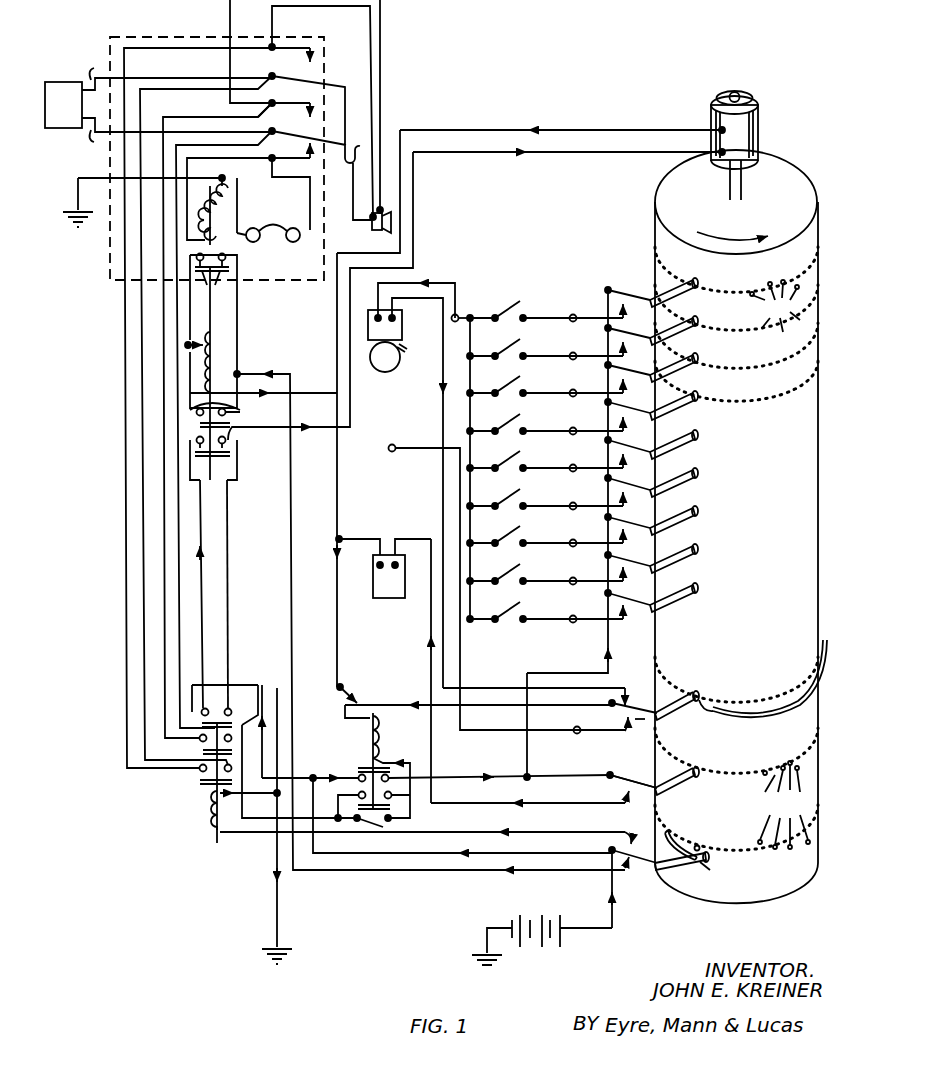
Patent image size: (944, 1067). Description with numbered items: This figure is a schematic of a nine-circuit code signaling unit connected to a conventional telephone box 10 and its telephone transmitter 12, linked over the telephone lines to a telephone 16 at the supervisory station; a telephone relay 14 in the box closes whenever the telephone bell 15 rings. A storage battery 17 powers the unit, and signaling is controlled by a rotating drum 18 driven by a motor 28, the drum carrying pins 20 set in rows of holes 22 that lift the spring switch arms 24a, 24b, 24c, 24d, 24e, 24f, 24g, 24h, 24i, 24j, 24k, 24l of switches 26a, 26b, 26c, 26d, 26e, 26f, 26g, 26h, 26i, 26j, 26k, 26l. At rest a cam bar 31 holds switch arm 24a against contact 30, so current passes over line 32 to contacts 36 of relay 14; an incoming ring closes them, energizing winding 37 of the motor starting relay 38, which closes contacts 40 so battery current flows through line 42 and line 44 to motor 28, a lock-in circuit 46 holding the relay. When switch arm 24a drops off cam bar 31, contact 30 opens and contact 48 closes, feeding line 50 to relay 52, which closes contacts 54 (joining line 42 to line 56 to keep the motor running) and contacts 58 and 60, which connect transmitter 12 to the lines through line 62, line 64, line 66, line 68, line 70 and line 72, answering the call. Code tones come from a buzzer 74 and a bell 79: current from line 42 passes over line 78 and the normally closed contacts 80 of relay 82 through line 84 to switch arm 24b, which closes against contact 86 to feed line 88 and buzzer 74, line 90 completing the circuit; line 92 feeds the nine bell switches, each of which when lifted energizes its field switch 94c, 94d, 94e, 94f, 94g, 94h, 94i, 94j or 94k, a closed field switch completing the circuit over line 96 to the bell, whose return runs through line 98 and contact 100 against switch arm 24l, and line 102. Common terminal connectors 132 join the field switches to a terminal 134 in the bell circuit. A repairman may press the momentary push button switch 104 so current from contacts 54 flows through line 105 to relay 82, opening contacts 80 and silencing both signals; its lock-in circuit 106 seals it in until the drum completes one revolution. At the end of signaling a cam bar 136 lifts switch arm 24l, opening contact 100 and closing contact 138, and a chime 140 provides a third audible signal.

The telephone box 10 is at (161, 37).
The telephone transmitter 12 is at (372, 228).
The telephone relay 14 is at (232, 240).
The telephone bell 15 is at (294, 244).
The telephone 16 is at (64, 82).
The storage battery 17 is at (544, 918).
The rotating drum 18 is at (736, 526).
The pins 20 is at (718, 777).
The holes 22 is at (780, 564).
The switch arm 24a is at (683, 870).
The switch arm 24b is at (690, 790).
The switch arm 24c is at (672, 598).
The switch arm 24d is at (675, 562).
The switch arm 24e is at (655, 535).
The switch arm 24f is at (650, 491).
The switch arm 24g is at (655, 458).
The switch arm 24h is at (651, 414).
The switch arm 24i is at (660, 380).
The switch arm 24j is at (650, 329).
The switch arm 24k is at (650, 295).
The switch arm 24l is at (688, 695).
The switch 26a is at (724, 868).
The switch 26b is at (712, 757).
The switch 26c is at (714, 577).
The switch 26d is at (716, 540).
The switch 26e is at (716, 501).
The switch 26f is at (713, 462).
The switch 26g is at (716, 424).
The switch 26h is at (712, 387).
The switch 26i is at (711, 349).
The switch 26j is at (712, 312).
The switch 26k is at (716, 273).
The switch 26l is at (720, 696).
The motor 28 is at (757, 125).
The contact 30 is at (630, 887).
The cam bar 31 is at (690, 845).
The line 32 is at (293, 557).
The contacts 36 is at (213, 331).
The winding 37 is at (222, 318).
The motor starting relay 38 is at (245, 447).
The contacts 40 is at (213, 453).
The line 42 is at (203, 636).
The line 44 is at (508, 160).
The lock in circuit 46 is at (229, 413).
The contact 48 is at (639, 824).
The line 50 is at (594, 828).
The relay 52 is at (196, 808).
The contacts 54 is at (208, 710).
The line 56 is at (228, 590).
The contacts 58 is at (210, 743).
The contacts 60 is at (205, 778).
The line 62 is at (145, 535).
The line 64 is at (127, 510).
The line 66 is at (369, 28).
The line 68 is at (383, 88).
The line 70 is at (200, 117).
The line 72 is at (180, 548).
The buzzer 74 is at (398, 593).
The line 78 is at (340, 802).
The bell 79 is at (400, 368).
The contacts 80 is at (370, 770).
The relay 82 is at (385, 762).
The line 84 is at (478, 776).
The contact 86 is at (620, 797).
The line 88 is at (430, 665).
The line 90 is at (365, 539).
The line 92 is at (528, 752).
The field switch 94c is at (545, 619).
The field switch 94d is at (545, 581).
The field switch 94e is at (545, 543).
The field switch 94f is at (545, 506).
The field switch 94g is at (545, 468).
The field switch 94h is at (545, 431).
The field switch 94i is at (545, 393).
The field switch 94j is at (545, 356).
The field switch 94k is at (545, 318).
The line 96 is at (449, 282).
The line 98 is at (494, 688).
The contact 100 is at (600, 672).
The line 102 is at (574, 717).
The momentary push button switch 104 is at (372, 848).
The line 105 is at (288, 826).
The lock in circuit 106 is at (410, 790).
The common terminal connectors 132 is at (484, 306).
The terminal 134 is at (459, 333).
The cam bar 136 is at (795, 722).
The contact 138 is at (637, 740).
The chime 140 is at (395, 445).